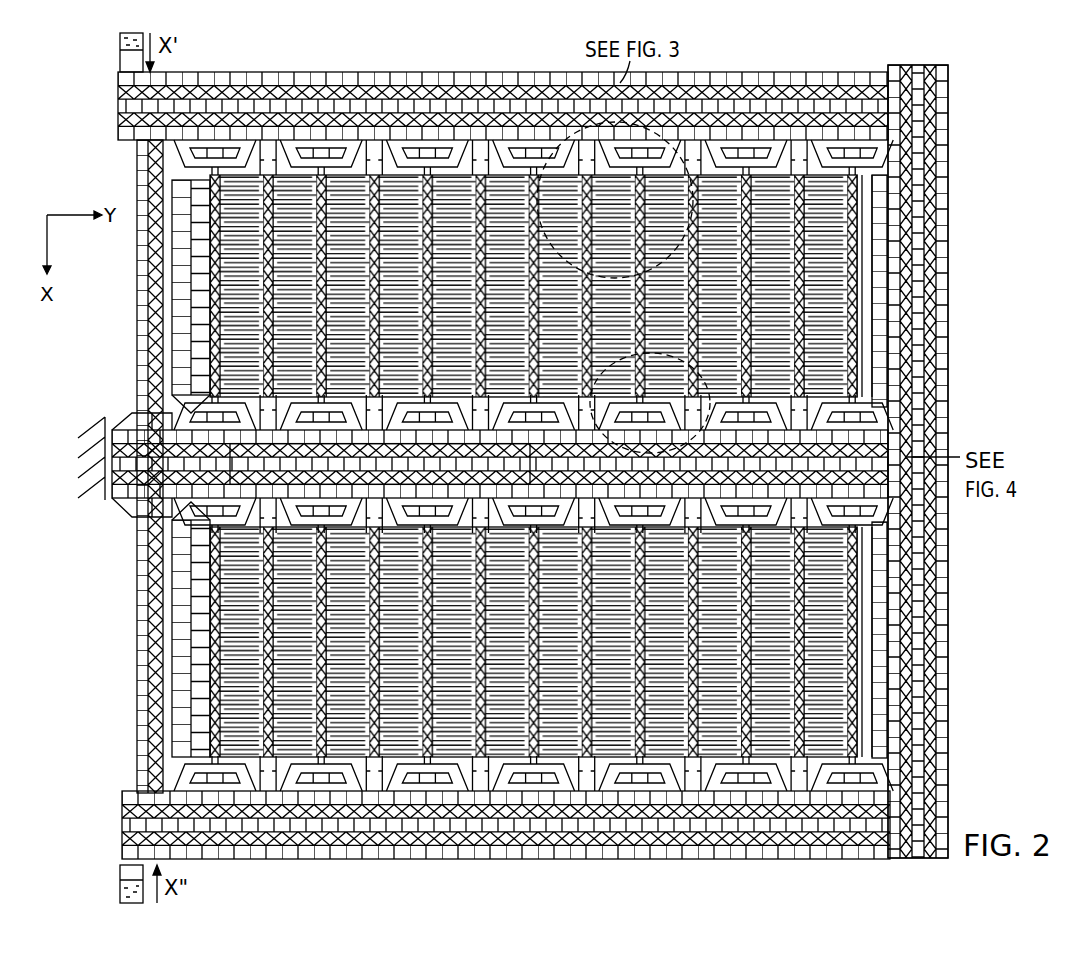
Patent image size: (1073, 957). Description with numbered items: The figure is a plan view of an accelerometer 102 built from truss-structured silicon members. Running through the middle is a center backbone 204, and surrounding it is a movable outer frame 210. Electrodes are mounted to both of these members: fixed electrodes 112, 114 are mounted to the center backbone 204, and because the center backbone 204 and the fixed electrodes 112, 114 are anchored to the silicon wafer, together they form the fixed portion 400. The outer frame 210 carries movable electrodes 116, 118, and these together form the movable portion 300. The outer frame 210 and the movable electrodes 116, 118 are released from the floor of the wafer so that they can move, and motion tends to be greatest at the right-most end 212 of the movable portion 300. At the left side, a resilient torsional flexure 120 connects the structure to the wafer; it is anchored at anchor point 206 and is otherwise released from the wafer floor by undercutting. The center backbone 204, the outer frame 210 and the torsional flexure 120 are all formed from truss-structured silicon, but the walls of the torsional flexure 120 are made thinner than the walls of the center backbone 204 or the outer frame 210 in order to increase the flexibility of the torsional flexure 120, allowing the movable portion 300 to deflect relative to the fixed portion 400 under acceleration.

The microelectromechanical comb-drive actuator 102 is at (947, 284).
The fixed electrode 112 is at (490, 313).
The fixed electrode 114 is at (281, 297).
The movable electrode 116 is at (528, 371).
The movable electrode 118 is at (313, 254).
The torsional flexure 120 is at (137, 323).
The center backbone 204 is at (278, 477).
The anchor point 206 is at (71, 476).
The movable outer frame 210 is at (406, 72).
The right-most end 212 is at (947, 176).
The movable portion 300 is at (290, 72).
The fixed portion 400 is at (358, 477).